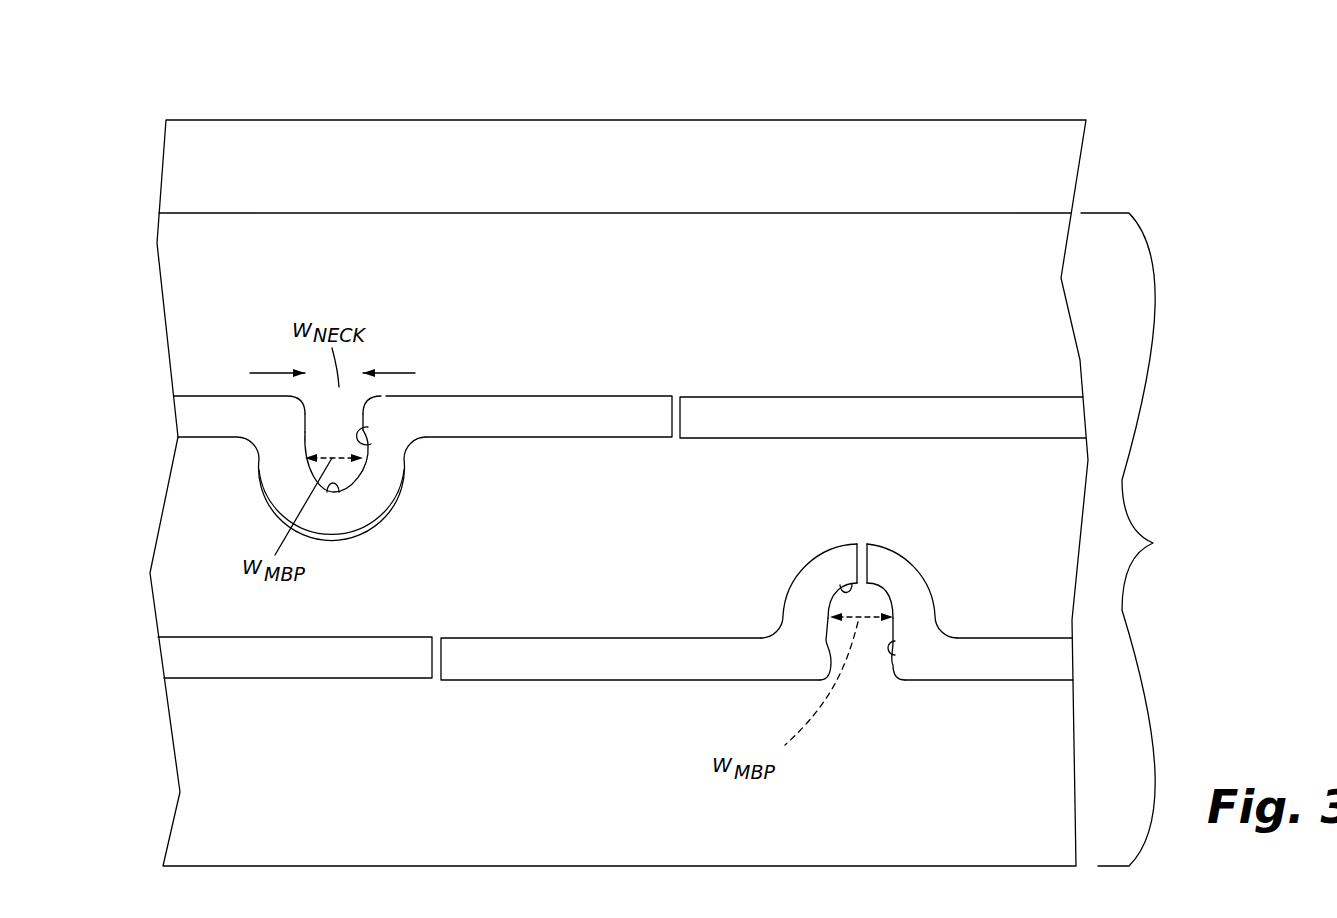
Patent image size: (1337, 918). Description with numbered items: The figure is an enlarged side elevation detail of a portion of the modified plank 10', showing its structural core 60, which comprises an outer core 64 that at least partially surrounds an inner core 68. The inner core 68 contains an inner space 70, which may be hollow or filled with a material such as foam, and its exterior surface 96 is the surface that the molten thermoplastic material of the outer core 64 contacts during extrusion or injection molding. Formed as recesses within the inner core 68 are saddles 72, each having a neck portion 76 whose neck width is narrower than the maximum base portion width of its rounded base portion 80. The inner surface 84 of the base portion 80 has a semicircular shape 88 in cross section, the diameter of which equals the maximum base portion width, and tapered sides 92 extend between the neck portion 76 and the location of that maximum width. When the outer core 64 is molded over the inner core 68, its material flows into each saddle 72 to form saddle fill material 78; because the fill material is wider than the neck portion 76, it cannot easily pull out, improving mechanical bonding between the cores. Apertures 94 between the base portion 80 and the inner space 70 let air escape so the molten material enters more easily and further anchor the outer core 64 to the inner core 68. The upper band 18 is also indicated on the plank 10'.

The plank 10' is at (619, 437).
The crown / top band 18 is at (917, 147).
The structural core 60 is at (1140, 539).
The outer core 64 is at (600, 252).
The inner core 68 is at (485, 413).
The inner space 70 is at (588, 598).
The saddle 72 is at (228, 463).
The neck portion 76 is at (368, 408).
The saddle fill material 78 is at (318, 435).
The base portion 80 is at (362, 487).
The inner surface 84 is at (328, 490).
The semicircular shape 88 is at (300, 468).
The tapered sides 92 is at (365, 432).
The apertures 94 is at (682, 418).
The exterior surface 96 is at (750, 397).